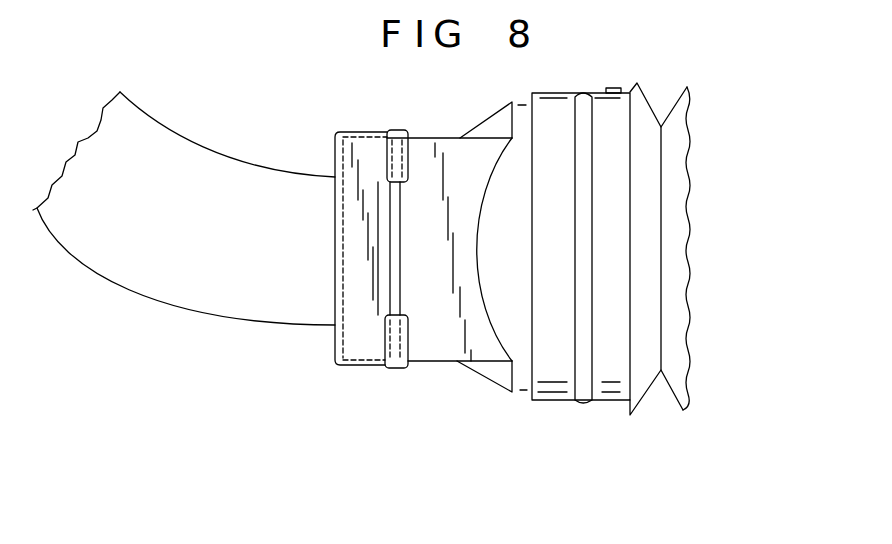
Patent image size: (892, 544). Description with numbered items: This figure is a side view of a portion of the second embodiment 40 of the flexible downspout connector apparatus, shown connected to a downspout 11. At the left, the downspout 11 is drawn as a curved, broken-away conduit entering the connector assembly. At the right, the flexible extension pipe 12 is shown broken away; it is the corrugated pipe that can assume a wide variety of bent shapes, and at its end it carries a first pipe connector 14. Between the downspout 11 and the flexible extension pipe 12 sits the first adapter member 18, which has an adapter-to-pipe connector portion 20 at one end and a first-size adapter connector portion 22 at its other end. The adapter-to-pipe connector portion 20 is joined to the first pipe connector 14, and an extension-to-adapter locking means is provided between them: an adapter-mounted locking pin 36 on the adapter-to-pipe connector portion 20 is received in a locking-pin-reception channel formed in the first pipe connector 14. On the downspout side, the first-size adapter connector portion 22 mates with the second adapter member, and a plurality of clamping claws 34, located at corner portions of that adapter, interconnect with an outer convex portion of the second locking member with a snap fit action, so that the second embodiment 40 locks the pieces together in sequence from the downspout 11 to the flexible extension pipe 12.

The downspout 11 is at (195, 243).
The flexible extension pipe 12 is at (687, 87).
The first pipe connector 14 is at (608, 363).
The first adapter member 18 is at (525, 83).
The adapter-to-pipe connector portion 20 is at (512, 102).
The first-size adapter connector portion 22 is at (432, 343).
The clamping claws 34 is at (397, 130).
The adapter-mounted locking pin 36 is at (618, 88).
The second embodiment 40 is at (365, 72).